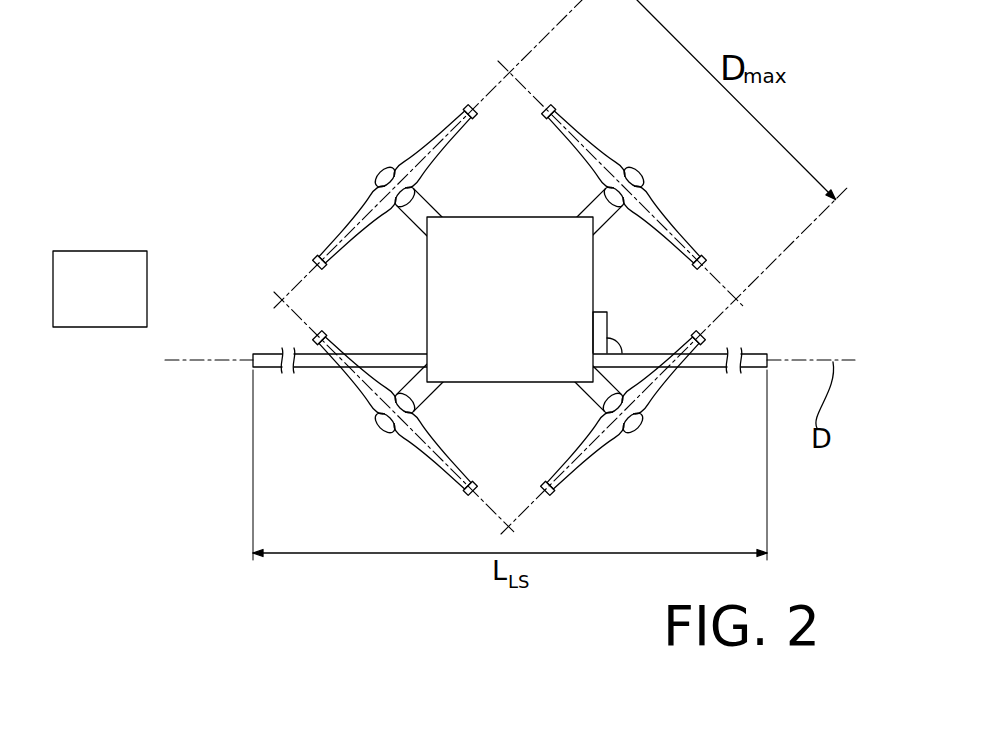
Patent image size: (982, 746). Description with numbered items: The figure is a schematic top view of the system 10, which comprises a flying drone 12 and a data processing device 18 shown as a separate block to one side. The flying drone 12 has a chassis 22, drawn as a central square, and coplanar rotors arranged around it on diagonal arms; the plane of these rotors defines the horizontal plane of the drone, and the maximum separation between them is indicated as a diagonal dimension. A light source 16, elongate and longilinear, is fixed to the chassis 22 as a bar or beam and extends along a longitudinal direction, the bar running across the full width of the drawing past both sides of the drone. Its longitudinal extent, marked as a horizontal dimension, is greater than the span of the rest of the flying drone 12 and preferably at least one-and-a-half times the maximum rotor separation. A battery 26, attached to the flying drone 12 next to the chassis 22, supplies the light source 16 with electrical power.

The system 10 is at (406, 306).
The flying drone 12 is at (343, 407).
The light source 16 is at (697, 370).
The data processing device 18 is at (80, 308).
The chassis 22 is at (427, 305).
The battery 26 is at (603, 330).